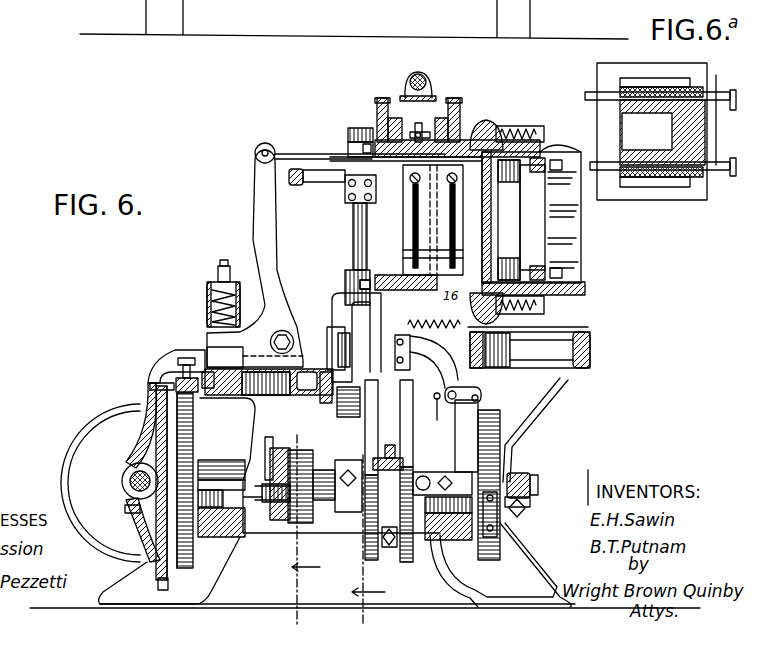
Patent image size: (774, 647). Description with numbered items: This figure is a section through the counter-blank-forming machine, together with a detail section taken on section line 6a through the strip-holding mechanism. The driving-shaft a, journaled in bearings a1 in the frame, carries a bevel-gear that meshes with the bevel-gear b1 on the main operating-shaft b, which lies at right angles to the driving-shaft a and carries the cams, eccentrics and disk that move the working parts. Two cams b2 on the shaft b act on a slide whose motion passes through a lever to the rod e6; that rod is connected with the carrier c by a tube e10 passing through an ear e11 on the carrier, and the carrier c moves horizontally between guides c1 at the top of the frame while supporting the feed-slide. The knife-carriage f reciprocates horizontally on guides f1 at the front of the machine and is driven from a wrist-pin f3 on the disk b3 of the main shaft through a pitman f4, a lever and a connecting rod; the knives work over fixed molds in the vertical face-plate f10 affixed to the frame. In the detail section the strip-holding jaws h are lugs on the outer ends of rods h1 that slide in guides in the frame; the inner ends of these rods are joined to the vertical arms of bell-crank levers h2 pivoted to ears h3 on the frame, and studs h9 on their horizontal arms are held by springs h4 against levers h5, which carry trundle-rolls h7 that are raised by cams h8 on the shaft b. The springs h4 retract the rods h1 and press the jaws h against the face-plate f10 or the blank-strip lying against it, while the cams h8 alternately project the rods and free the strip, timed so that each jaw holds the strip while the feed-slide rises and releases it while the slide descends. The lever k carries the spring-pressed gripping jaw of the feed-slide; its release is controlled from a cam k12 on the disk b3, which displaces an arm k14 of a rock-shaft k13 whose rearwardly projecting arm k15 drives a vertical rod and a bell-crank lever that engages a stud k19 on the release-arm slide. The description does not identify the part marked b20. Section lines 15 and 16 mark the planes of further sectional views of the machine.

In FIG. 6, the driving-shaft a is at (128, 470).
In FIG. 6, the bearings a1 is at (133, 485).
In FIG. 6, the main operating-shaft b is at (332, 512).
In FIG. 6, the bevel-gear b1 is at (187, 577).
In FIG. 6, the cams b2 is at (410, 577).
In FIG. 6, the disk b3 is at (502, 445).
In FIG. 6, the collar b20 is at (283, 443).
In FIG. 6, the carrier c is at (427, 100).
In FIG. 6, the guides c1 is at (480, 100).
In FIG. 6, the rod e6 is at (415, 73).
In FIG. 6, the tube e10 is at (440, 64).
In FIG. 6, the ear e11 is at (407, 87).
In FIG. 6, the knife-carriage f is at (565, 230).
In FIG. 6, the guides f1 is at (493, 126).
In FIG. 6, the wrist-pin f3 is at (533, 497).
In FIG. 6, the pitman f4 is at (524, 508).
In FIG. 6a, the face-plate f10 is at (686, 148).
In FIG. 6a, the strip-holding jaws h is at (733, 90).
In FIG. 6, the rods h1 is at (312, 154).
In FIG. 6a, the rods h1 is at (605, 163).
In FIG. 6, the bell-crank levers h2 is at (258, 218).
In FIG. 6, the ears h3 is at (286, 336).
In FIG. 6, the springs h4 is at (207, 295).
In FIG. 6, the levers h5 is at (172, 386).
In FIG. 6, the trundle-rolls h7 is at (220, 392).
In FIG. 6, the cams h8 is at (232, 557).
In FIG. 6, the studs h9 is at (182, 362).
In FIG. 6, the lever k is at (425, 330).
In FIG. 6, the cam k12 is at (500, 533).
In FIG. 6, the rock-shaft k13 is at (508, 398).
In FIG. 6, the arm k14 is at (538, 414).
In FIG. 6, the arm k15 is at (436, 404).
In FIG. 6, the stud k19 is at (418, 114).
In FIG. 6, the section line 6a is at (427, 220).
In FIG. 6, the section line 15 is at (300, 446).
In FIG. 6, the section line 16 is at (390, 202).